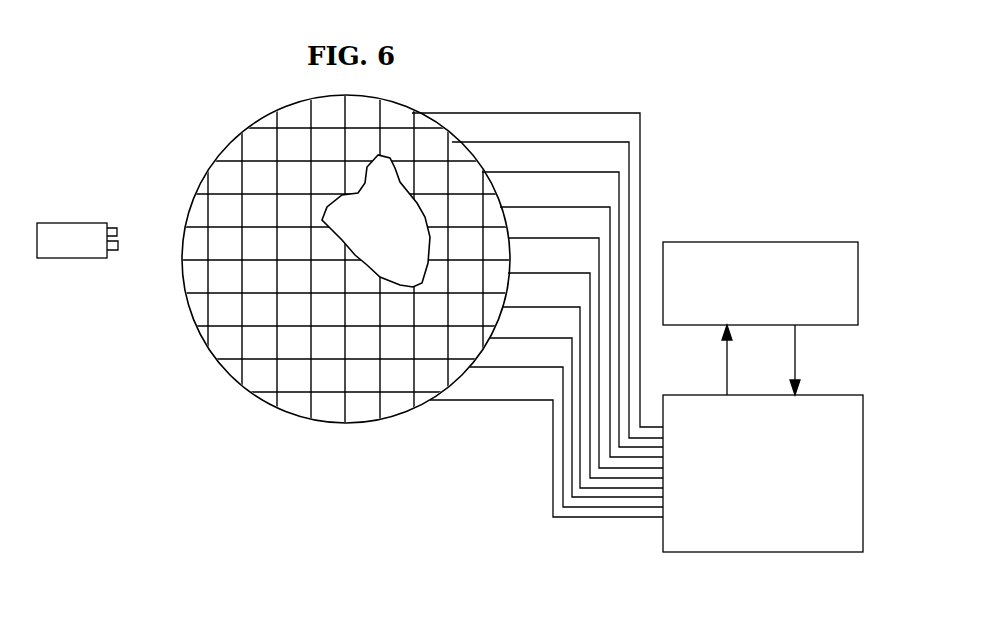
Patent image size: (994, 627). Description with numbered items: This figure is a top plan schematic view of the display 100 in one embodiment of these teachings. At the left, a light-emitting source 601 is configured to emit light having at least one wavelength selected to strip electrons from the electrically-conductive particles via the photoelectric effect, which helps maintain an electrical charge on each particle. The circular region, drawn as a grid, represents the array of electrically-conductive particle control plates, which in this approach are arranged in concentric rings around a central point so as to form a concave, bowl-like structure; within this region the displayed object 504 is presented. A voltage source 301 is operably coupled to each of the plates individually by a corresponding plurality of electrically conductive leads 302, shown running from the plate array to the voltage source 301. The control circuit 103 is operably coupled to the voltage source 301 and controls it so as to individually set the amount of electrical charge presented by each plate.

The display 100 is at (382, 525).
The displayed object 504 is at (395, 235).
The light-emitting source 601 is at (50, 222).
The electrically conductive leads 302 is at (570, 520).
The control circuit 103 is at (783, 241).
The voltage source 301 is at (863, 466).